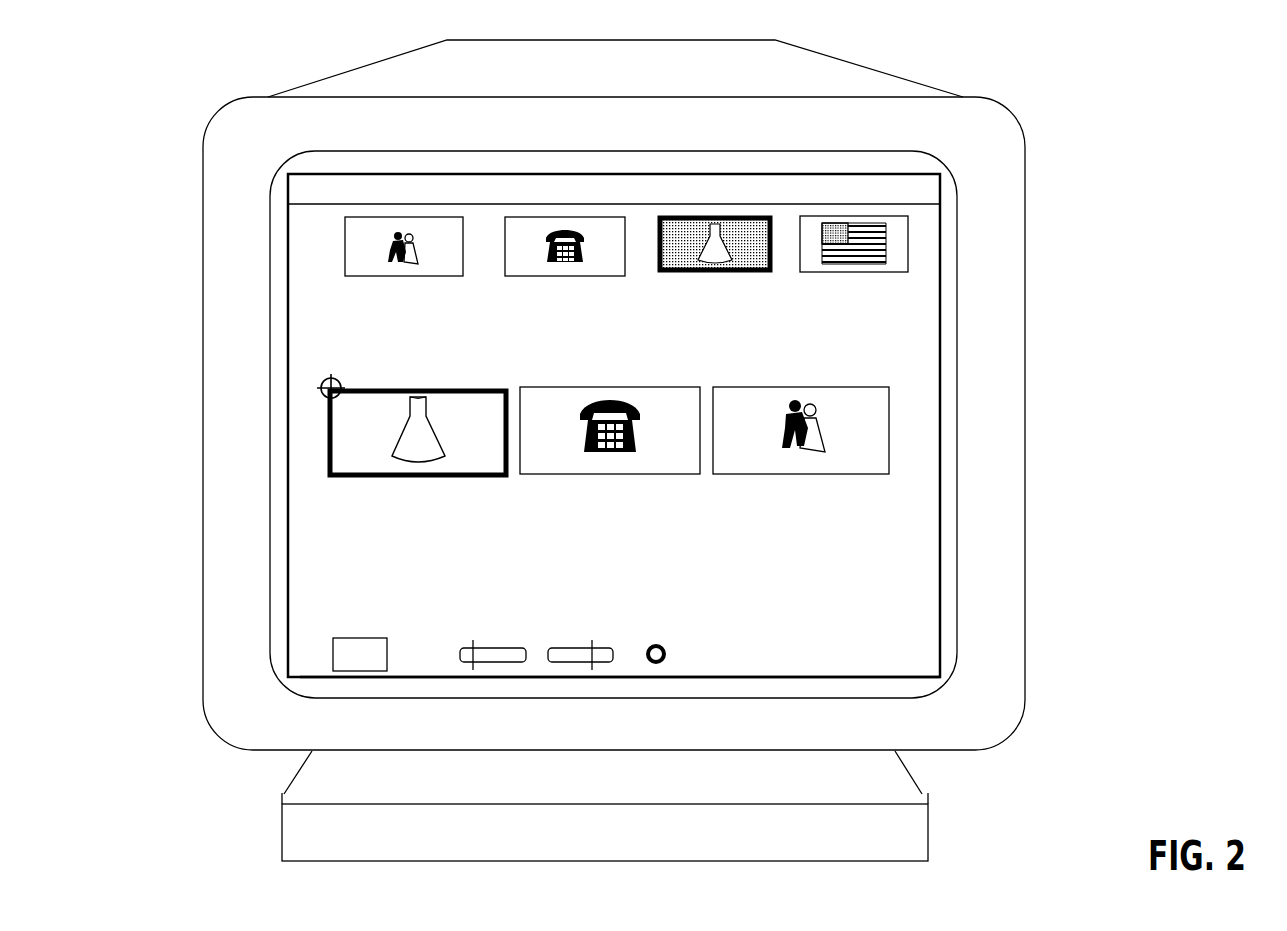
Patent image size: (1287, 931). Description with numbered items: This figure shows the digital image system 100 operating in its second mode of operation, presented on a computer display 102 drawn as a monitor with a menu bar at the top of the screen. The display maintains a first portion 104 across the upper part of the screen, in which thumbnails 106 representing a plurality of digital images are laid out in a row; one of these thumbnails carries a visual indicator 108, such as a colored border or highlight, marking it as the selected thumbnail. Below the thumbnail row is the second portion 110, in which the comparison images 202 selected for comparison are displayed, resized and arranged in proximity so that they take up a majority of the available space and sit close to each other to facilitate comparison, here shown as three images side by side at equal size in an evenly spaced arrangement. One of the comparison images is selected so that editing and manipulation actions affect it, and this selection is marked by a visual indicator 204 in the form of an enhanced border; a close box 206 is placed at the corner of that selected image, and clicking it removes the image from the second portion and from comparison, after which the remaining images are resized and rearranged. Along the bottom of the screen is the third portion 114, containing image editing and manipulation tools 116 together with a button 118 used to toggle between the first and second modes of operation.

The digital image system 100 is at (935, 215).
The computer display 102 is at (233, 127).
The first portion 104 is at (298, 231).
The thumbnails 106 is at (802, 217).
The visual indicator 108 is at (742, 266).
The second portion 110 is at (313, 447).
The third portion 114 is at (298, 653).
The image editing and manipulation tools 116 is at (648, 671).
The button 118 is at (359, 674).
The comparison images 202 is at (833, 508).
The visual indicator 204 is at (462, 489).
The close box 206 is at (331, 376).